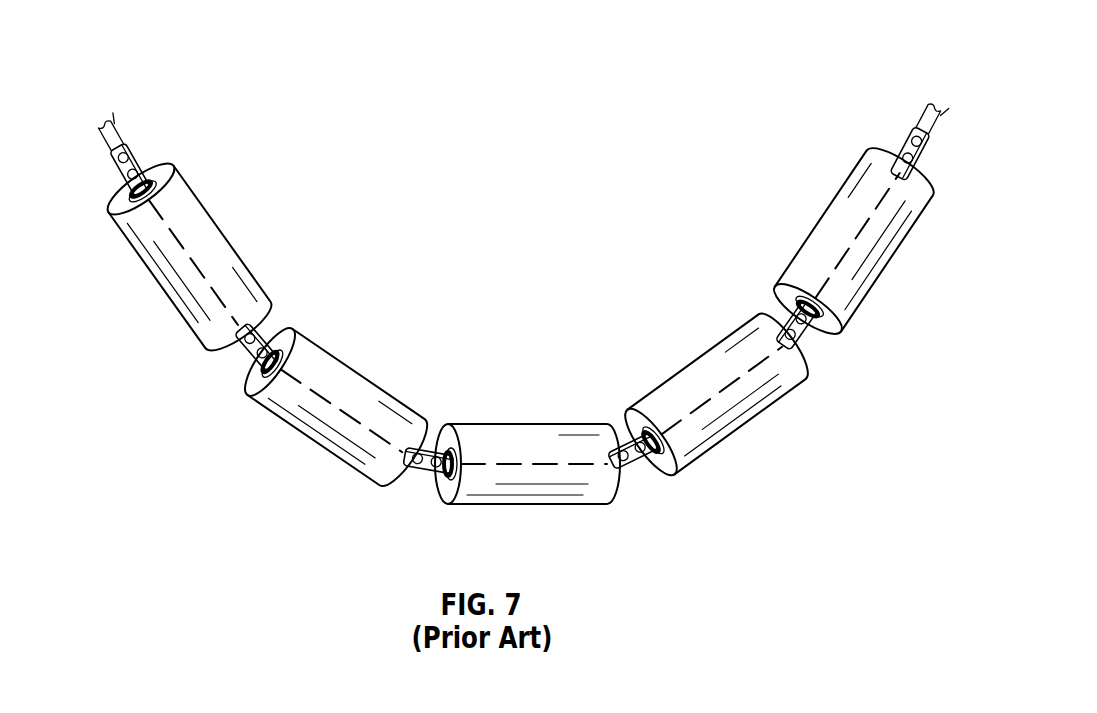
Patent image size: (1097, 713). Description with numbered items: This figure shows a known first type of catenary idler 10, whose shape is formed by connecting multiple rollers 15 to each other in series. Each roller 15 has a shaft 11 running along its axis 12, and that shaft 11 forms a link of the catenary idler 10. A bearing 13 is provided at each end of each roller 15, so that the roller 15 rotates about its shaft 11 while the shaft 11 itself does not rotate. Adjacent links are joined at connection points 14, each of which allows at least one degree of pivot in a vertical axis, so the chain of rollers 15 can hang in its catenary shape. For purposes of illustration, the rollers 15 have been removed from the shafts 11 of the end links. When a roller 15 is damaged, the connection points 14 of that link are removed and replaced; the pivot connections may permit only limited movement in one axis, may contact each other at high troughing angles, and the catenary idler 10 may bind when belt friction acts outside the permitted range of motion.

The catenary idler 10 is at (117, 38).
The shaft 11 is at (115, 136).
The axis 12 is at (193, 253).
The bearing 13 is at (132, 193).
The connection point 14 is at (140, 157).
The roller 15 is at (187, 277).